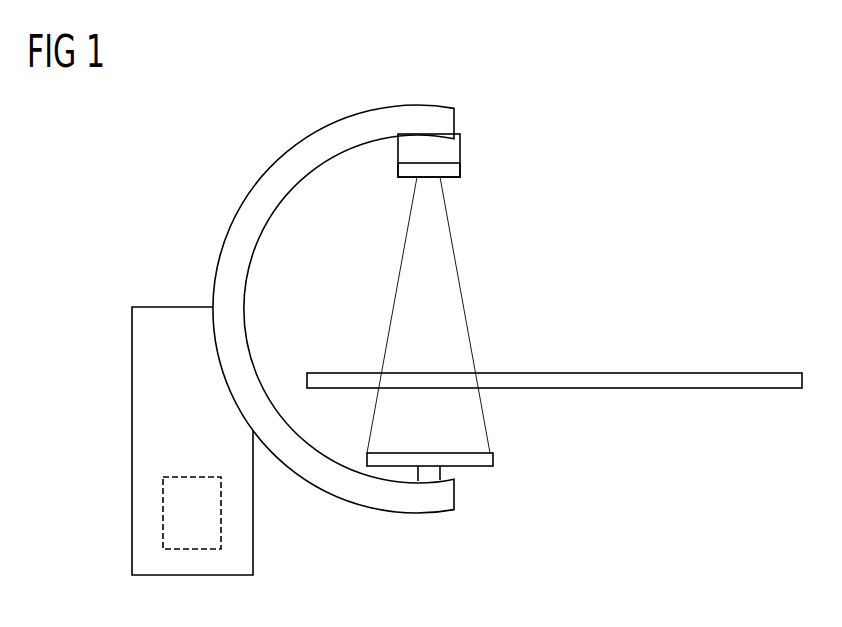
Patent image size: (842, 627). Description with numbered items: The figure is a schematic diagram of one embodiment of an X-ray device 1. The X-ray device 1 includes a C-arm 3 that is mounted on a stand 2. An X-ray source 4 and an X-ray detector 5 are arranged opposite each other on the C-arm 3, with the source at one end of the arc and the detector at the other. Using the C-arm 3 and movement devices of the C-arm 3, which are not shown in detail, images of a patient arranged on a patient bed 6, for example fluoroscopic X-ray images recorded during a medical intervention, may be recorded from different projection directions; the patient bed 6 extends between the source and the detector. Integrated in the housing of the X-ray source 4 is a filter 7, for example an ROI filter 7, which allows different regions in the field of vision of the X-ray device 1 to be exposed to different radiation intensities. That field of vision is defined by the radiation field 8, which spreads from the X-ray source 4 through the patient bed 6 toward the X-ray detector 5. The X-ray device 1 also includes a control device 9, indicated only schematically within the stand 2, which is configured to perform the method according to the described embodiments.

The X-ray device 1 is at (264, 111).
The stand 2 is at (131, 435).
The C-arm 3 is at (233, 252).
The X-ray source 4 is at (450, 147).
The X-ray detector 5 is at (478, 468).
The patient bed 6 is at (622, 388).
The filter 7 is at (450, 170).
The radiation field 8 is at (465, 300).
The control device 9 is at (162, 512).